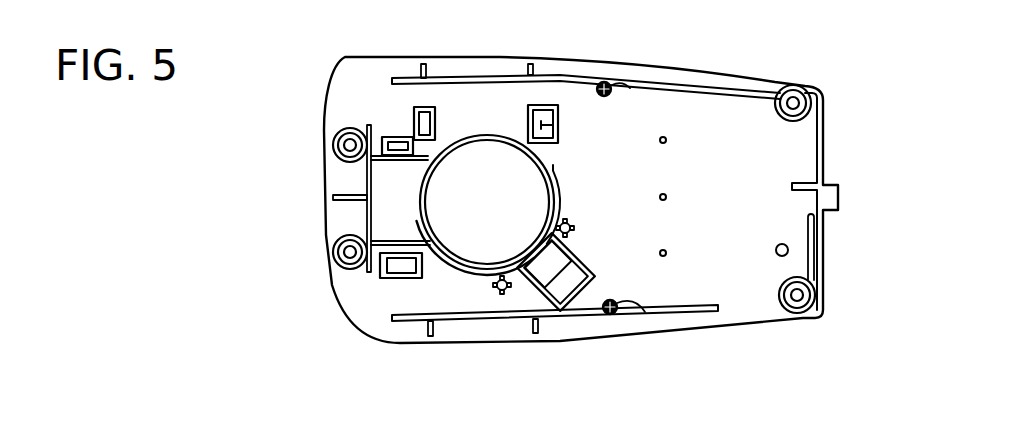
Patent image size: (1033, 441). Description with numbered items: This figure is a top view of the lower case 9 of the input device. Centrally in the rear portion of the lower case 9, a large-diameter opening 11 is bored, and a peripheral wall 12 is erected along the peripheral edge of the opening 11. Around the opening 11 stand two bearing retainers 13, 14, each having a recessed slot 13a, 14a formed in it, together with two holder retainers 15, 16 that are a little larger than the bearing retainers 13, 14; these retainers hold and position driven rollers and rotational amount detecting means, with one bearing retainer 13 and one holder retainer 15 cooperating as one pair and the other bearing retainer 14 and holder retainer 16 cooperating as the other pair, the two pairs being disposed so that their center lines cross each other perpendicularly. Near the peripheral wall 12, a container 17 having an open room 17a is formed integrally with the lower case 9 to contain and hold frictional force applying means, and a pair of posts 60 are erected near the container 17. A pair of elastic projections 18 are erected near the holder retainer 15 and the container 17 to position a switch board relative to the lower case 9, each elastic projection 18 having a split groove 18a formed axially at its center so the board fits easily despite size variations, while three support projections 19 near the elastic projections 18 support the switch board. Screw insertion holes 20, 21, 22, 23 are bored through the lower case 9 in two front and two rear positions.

The lower case 9 is at (823, 107).
The opening 11 is at (473, 273).
The peripheral wall 12 is at (480, 133).
The bearing retainer 13 is at (414, 120).
The recessed slot 13a is at (435, 107).
The bearing retainer 14 is at (412, 133).
The recessed slot 14a is at (384, 142).
The holder retainer 15 is at (543, 105).
The holder retainer 16 is at (380, 275).
The container 17 is at (561, 311).
The open room 17a is at (553, 275).
The elastic projection 18 is at (612, 91).
The split groove 18a is at (603, 81).
The support projection 19 is at (667, 140).
The screw insertion hole 20 is at (795, 86).
The screw insertion hole 21 is at (808, 318).
The screw insertion hole 22 is at (333, 145).
The screw insertion hole 23 is at (343, 242).
The post 60 is at (502, 290).